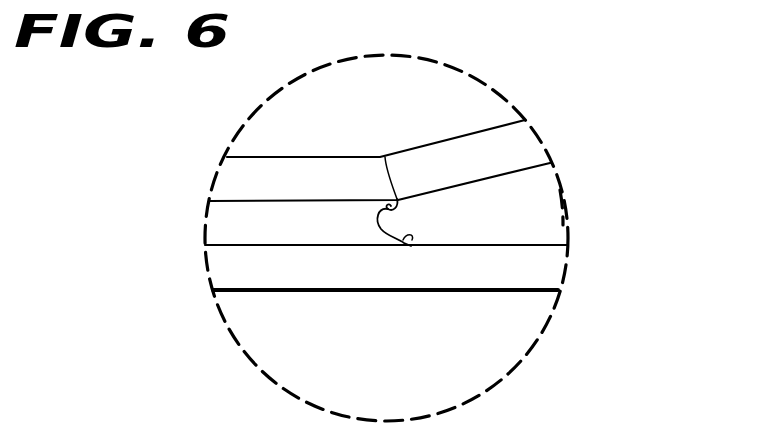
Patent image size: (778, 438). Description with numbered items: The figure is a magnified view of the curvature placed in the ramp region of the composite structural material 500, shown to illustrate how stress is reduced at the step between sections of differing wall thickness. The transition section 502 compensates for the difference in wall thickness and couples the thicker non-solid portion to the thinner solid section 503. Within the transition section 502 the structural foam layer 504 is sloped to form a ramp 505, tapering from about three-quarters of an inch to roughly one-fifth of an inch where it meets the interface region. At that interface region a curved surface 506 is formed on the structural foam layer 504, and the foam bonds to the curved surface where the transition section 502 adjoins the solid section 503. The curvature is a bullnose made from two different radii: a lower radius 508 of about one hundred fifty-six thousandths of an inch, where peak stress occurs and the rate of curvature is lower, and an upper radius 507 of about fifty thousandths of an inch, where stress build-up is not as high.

The composite structural material 500 is at (149, 128).
The transition section 502 is at (447, 318).
The solid section 503 is at (307, 143).
The structural foam layer 504 is at (548, 203).
The ramp 505 is at (480, 178).
The curved surface 506 is at (378, 223).
The radius 507 is at (385, 157).
The radius 508 is at (411, 246).